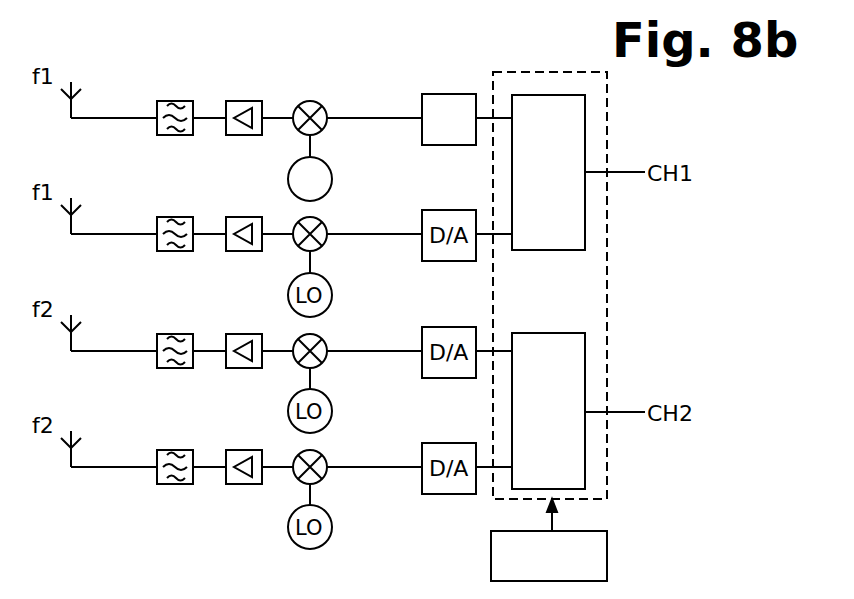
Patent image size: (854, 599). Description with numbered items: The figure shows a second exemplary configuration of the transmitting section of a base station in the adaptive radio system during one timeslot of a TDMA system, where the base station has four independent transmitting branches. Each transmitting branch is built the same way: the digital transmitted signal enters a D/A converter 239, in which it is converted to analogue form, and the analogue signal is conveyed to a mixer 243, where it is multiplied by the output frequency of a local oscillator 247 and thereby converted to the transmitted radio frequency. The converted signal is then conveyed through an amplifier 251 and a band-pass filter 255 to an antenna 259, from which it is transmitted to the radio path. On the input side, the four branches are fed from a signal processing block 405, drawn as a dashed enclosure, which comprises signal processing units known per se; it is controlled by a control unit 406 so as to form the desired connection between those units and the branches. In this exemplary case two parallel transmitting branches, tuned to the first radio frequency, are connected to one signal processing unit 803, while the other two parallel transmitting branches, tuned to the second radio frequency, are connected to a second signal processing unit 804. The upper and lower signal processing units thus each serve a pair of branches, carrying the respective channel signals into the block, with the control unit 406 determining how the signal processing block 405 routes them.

The antenna 259 is at (66, 107).
The band-pass filter 255 is at (157, 122).
The amplifier 251 is at (226, 127).
The mixer 243 is at (311, 101).
The local oscillator 247 is at (289, 181).
The D/A converter 239 is at (420, 136).
The signal processing block 405 is at (537, 72).
The signal processing unit 803 is at (585, 119).
The second signal processing unit 804 is at (585, 364).
The control unit 406 is at (491, 557).